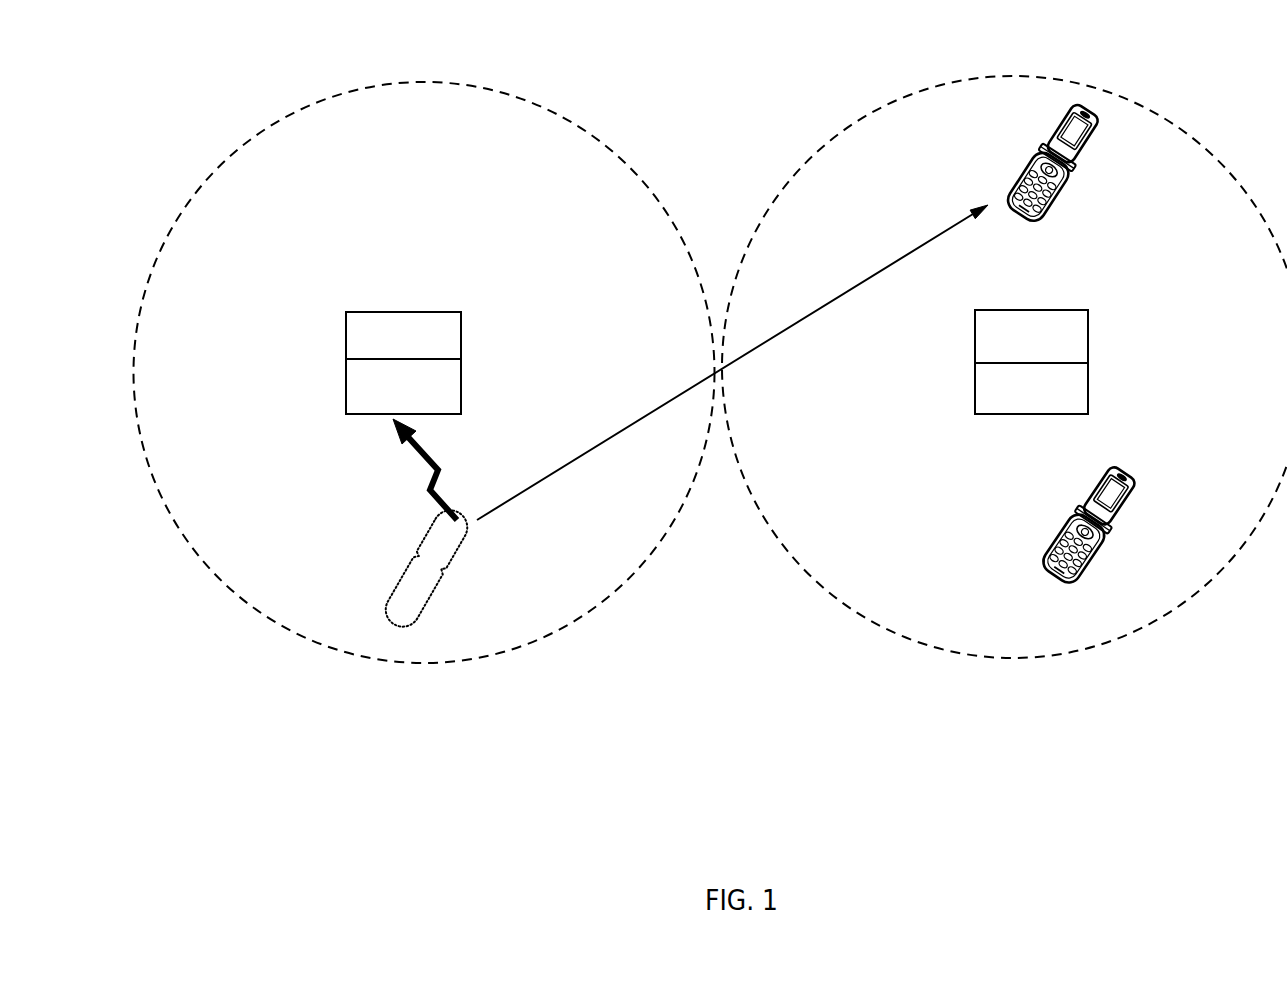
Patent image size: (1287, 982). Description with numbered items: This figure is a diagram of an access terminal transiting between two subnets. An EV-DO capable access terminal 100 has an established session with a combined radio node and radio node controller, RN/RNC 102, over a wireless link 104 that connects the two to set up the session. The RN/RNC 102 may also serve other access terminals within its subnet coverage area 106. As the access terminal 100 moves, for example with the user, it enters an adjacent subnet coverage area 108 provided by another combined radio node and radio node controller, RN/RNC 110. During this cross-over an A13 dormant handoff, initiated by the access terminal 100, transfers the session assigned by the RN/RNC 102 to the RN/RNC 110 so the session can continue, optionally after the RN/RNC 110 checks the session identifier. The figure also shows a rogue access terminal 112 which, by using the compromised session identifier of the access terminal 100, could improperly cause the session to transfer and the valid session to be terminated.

The access terminal 100 is at (452, 578).
The radio node controller with radio node 102 is at (460, 311).
The wireless link 104 is at (425, 463).
The subnet coverage area 106 is at (457, 82).
The adjacent subnet coverage area 108 is at (1138, 102).
The radio node controller with radio node 110 is at (1087, 310).
The rogue access terminal 112 is at (1083, 577).